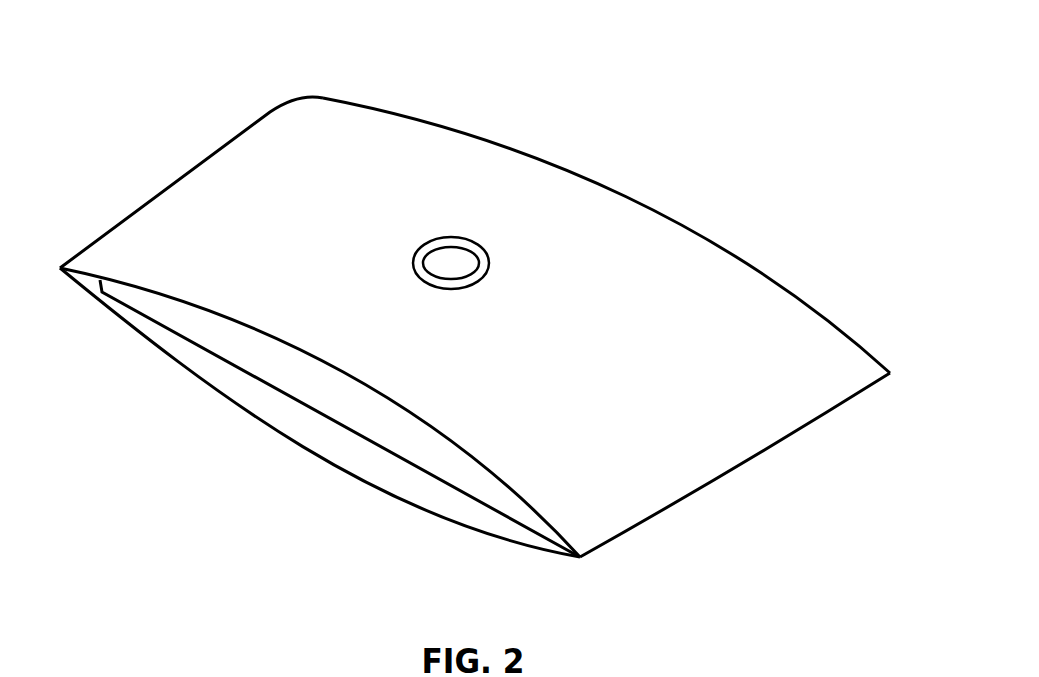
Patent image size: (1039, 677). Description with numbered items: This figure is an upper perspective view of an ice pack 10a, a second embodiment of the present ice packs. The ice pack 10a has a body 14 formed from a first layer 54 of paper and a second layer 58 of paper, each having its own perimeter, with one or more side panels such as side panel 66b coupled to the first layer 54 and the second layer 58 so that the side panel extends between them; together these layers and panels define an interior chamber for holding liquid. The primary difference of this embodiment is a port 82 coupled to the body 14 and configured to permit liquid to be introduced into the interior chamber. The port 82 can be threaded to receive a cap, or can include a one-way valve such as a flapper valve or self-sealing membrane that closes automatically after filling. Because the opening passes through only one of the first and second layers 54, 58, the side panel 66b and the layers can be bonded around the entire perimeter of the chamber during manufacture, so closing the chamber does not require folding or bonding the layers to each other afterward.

The ice pack 10a is at (99, 78).
The body 14 is at (420, 155).
The first layer 54 is at (686, 235).
The second layer 58 is at (528, 543).
The side panel 66b is at (218, 345).
The port 82 is at (458, 255).